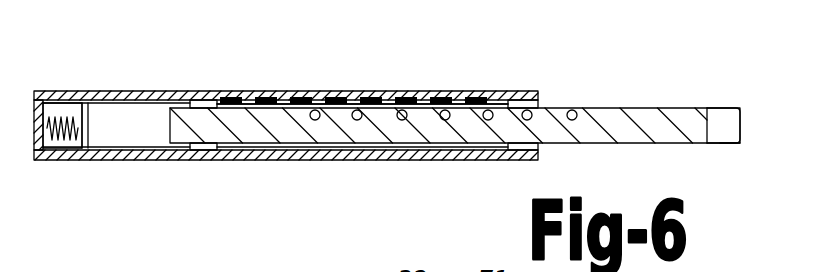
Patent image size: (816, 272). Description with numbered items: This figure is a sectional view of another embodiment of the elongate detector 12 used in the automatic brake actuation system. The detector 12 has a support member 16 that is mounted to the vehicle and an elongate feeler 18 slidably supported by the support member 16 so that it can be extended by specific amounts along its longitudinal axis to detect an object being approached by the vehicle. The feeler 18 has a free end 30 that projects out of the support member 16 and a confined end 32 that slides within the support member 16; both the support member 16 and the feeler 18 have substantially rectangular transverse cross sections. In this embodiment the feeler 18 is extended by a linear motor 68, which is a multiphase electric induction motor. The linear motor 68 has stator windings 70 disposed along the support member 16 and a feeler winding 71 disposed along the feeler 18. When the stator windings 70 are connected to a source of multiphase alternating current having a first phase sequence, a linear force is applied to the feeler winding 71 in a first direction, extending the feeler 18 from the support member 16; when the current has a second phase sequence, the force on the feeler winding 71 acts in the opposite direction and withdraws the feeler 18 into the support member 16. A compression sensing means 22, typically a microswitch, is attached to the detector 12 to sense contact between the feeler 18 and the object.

The elongate detector 12 is at (530, 32).
The support member 16 is at (135, 91).
The elongate feeler 18 is at (632, 108).
The compression sensing means 22 is at (737, 158).
The free end 30 is at (776, 91).
The confined end 32 is at (147, 132).
The linear motor 68 is at (318, 60).
The stator windings 70 is at (295, 89).
The feeler winding 71 is at (526, 120).